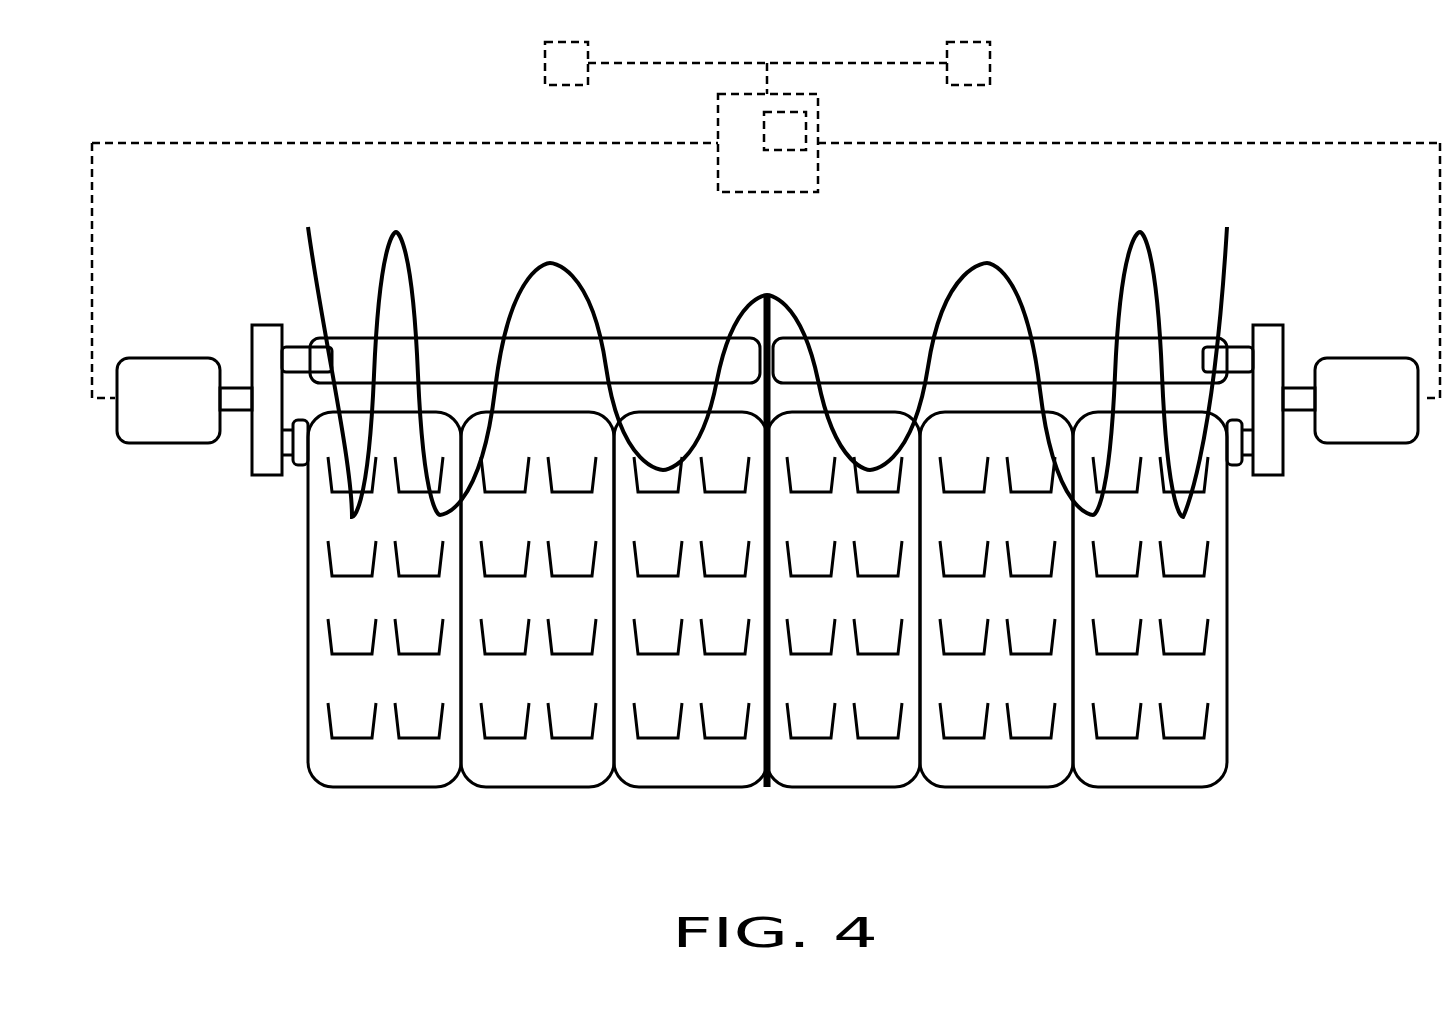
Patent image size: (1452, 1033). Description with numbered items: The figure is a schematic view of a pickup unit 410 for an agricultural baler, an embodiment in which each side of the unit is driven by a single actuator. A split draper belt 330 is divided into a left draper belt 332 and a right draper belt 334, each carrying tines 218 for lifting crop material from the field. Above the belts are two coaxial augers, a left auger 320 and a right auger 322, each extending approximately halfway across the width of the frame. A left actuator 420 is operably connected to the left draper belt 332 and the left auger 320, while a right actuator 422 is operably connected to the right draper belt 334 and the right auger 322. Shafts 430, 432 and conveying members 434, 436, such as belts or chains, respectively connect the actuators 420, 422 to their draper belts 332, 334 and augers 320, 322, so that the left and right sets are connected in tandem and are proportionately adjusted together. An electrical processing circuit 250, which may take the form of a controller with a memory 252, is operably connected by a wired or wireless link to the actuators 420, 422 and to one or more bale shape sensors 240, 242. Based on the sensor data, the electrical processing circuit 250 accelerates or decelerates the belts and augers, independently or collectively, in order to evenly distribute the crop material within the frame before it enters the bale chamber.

The tines 218 is at (423, 738).
The bale shape sensor 240 is at (545, 68).
The bale shape sensor 242 is at (990, 58).
The electrical processing circuit 250 is at (718, 105).
The memory 252 is at (806, 124).
The left auger 320 is at (444, 338).
The right auger 322 is at (1087, 338).
The split draper belt 330 is at (769, 654).
The left draper belt 332 is at (308, 705).
The right draper belt 334 is at (1230, 680).
The pickup unit 410 is at (368, 812).
The left actuator 420 is at (166, 445).
The right actuator 422 is at (1372, 445).
The shaft 430 is at (235, 388).
The shaft 432 is at (1300, 388).
The conveying member 434 is at (267, 477).
The conveying member 436 is at (1273, 477).